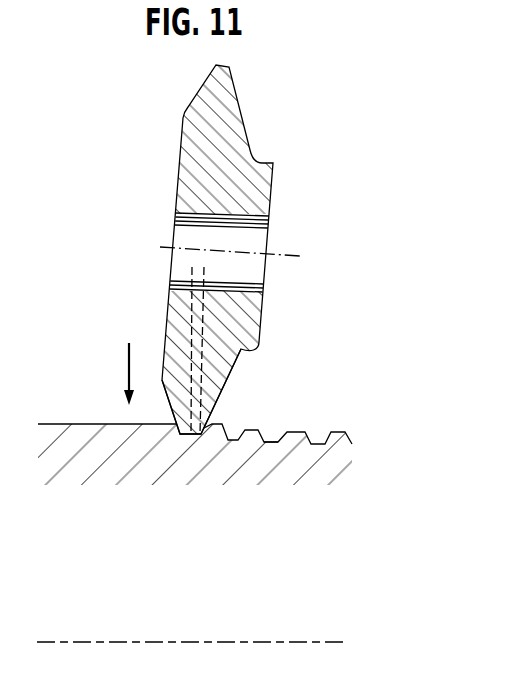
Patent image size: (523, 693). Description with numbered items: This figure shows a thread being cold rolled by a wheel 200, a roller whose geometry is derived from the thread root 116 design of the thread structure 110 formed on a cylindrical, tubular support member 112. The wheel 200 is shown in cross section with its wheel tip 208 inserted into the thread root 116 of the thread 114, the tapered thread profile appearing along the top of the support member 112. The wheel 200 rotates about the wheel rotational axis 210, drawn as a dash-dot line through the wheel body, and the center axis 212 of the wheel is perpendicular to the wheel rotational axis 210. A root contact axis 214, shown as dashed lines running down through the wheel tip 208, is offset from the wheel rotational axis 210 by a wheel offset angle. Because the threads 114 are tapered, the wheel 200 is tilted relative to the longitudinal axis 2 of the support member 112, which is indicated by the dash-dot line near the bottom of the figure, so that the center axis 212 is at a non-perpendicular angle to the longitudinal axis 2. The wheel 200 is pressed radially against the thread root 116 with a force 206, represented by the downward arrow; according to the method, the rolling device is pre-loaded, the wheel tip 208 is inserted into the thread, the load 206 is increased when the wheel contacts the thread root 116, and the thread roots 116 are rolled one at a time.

The longitudinal axis 2 is at (285, 641).
The thread structure 110 is at (196, 417).
The support member 112 is at (95, 424).
The thread 114 is at (284, 436).
The thread root 116 is at (272, 441).
The wheel 200 is at (214, 290).
The force 206 is at (128, 364).
The wheel tip 208 is at (201, 451).
The wheel rotational axis 210 is at (276, 256).
The center axis 212 is at (203, 335).
The root contact axis 214 is at (192, 308).